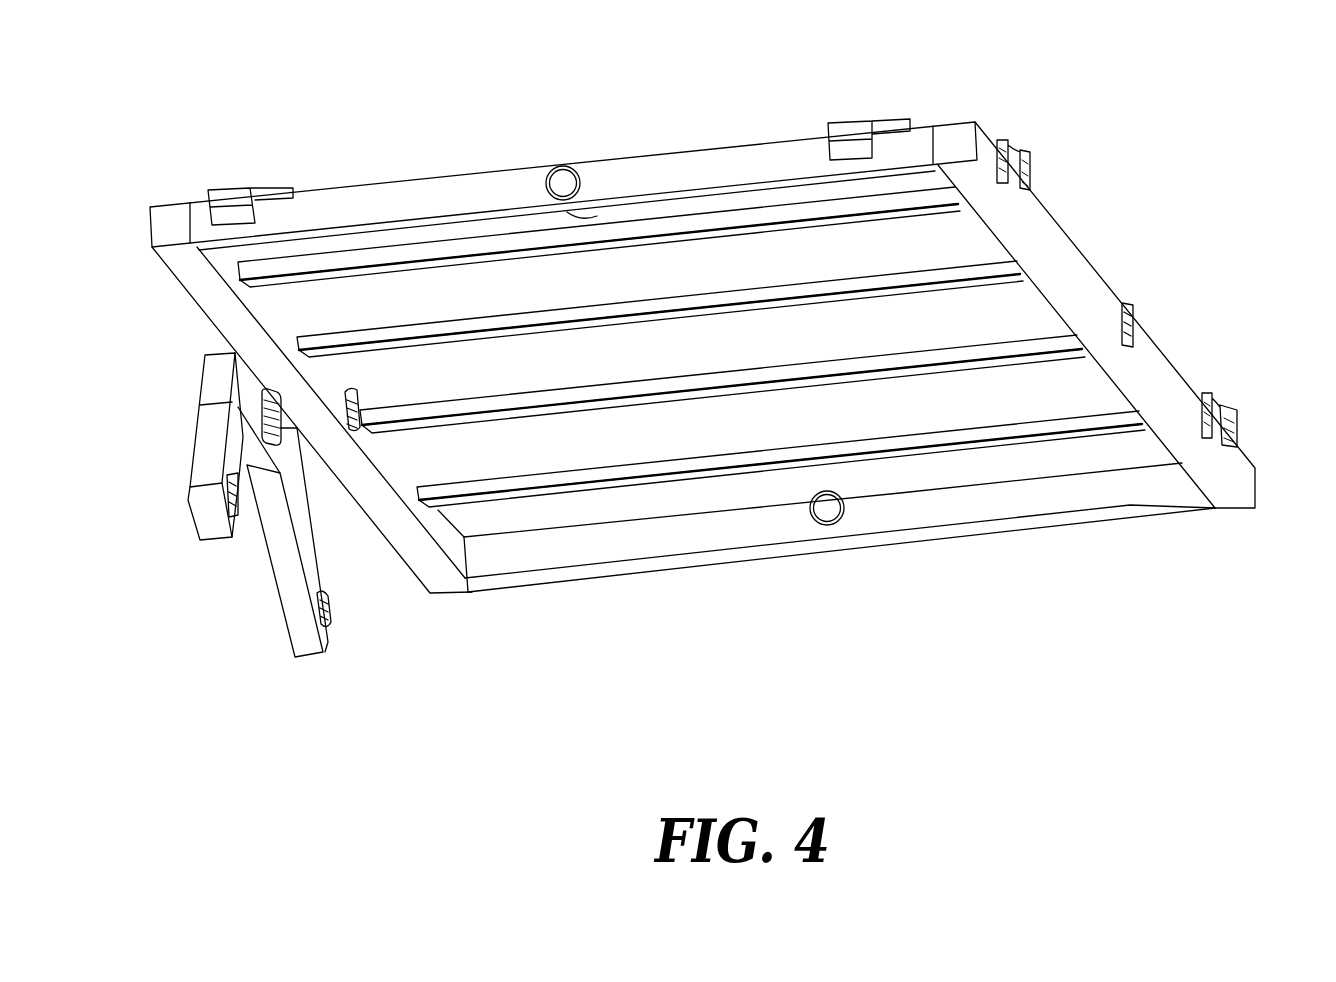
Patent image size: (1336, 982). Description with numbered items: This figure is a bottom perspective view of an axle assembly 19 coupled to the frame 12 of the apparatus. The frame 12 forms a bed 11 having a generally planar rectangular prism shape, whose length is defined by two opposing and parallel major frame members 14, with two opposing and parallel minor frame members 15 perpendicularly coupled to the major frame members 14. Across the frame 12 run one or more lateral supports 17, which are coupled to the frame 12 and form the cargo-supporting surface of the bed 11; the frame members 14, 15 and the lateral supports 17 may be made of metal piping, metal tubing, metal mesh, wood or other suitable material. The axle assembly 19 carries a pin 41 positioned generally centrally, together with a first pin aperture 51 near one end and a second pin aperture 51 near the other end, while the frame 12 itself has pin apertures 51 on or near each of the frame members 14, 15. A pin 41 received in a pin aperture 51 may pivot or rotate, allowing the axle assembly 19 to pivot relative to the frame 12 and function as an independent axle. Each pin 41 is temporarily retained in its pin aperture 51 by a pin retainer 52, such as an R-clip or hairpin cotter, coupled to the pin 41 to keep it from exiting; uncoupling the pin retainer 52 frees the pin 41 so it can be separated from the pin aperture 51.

The bed 11 is at (780, 357).
The frame 12 is at (744, 132).
The major frame members 14 is at (1073, 267).
The minor frame members 15 is at (410, 197).
The lateral supports 17 is at (453, 252).
The axle assembly 19 is at (207, 411).
The pin 41 is at (287, 187).
The pin aperture 51 is at (565, 182).
The pin retainer 52 is at (360, 403).